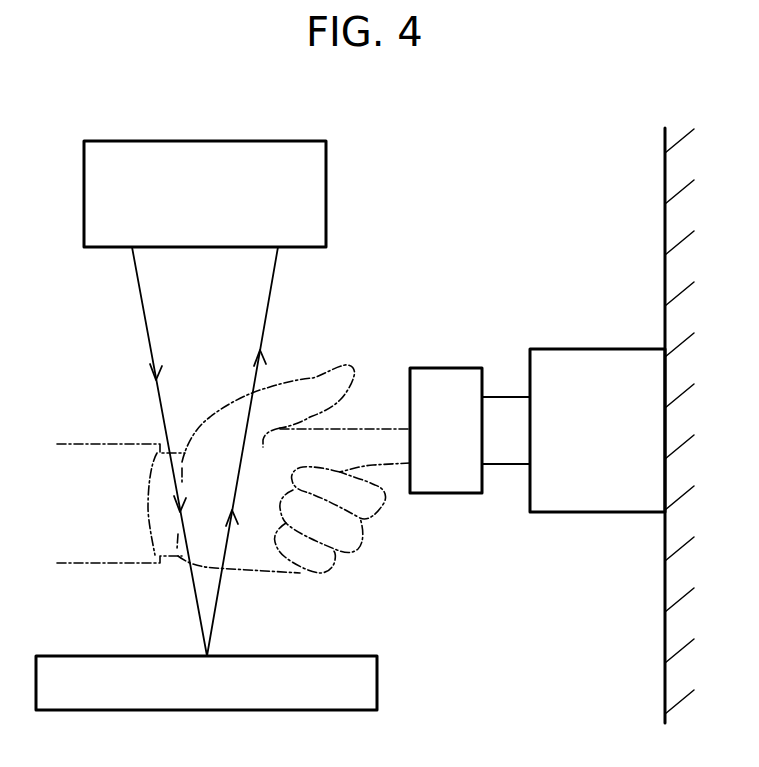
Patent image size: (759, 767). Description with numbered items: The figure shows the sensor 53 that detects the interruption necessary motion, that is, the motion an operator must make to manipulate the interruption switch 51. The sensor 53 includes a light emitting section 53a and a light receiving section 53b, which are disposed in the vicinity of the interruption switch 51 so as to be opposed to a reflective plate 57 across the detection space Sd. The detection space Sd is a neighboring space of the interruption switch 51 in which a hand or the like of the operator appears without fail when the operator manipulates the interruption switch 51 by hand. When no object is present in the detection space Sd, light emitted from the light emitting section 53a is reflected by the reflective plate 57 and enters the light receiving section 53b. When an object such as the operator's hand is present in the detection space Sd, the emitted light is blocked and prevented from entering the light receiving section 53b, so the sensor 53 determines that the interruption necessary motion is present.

The interruption switch 51 is at (446, 368).
The sensor 53 is at (327, 192).
The light emitting section 53a is at (132, 250).
The light receiving section 53b is at (278, 250).
The reflective plate 57 is at (78, 656).
The detection space Sd is at (367, 323).